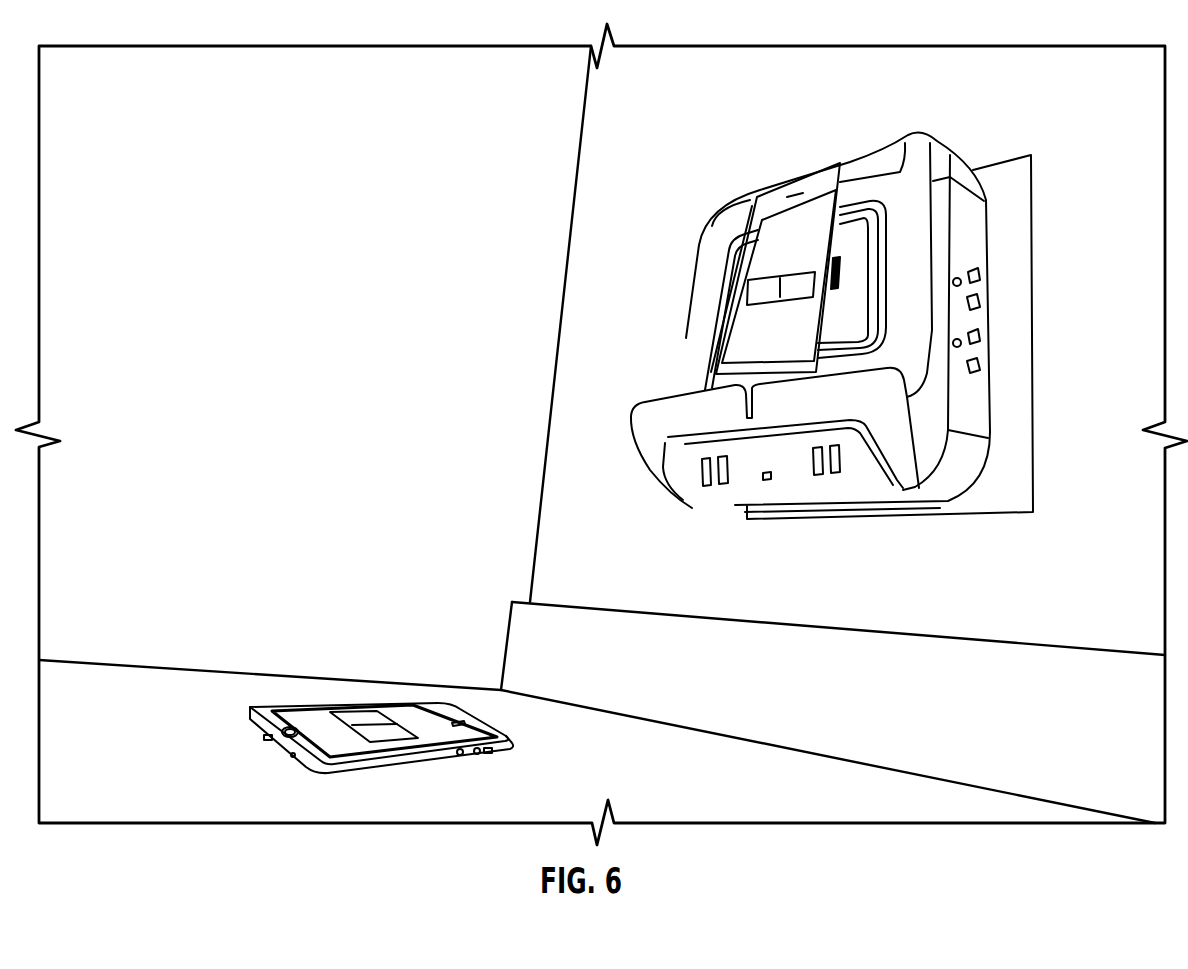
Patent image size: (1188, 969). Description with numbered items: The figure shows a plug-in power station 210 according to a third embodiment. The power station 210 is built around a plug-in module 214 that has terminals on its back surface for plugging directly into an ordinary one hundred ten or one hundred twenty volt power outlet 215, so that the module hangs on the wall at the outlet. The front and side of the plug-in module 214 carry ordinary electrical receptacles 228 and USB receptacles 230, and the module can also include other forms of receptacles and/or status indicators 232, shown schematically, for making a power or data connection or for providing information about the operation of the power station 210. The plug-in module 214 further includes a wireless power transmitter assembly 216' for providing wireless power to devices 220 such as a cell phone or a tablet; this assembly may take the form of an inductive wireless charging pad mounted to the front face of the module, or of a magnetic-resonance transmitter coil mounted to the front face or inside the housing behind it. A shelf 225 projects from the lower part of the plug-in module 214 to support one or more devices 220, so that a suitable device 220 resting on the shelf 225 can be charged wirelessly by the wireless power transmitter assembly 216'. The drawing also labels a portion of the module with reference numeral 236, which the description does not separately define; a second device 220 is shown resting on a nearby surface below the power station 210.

The power station 210 is at (1092, 35).
The plug-in module 214 is at (917, 150).
The power outlet 215 is at (1027, 480).
The wireless power transmitter assembly 216' is at (795, 249).
The device 220 is at (750, 267).
The shelf 225 is at (648, 430).
The electrical receptacles 228 is at (983, 274).
The USB receptacles 230 is at (710, 486).
The other receptacles and/or status indicators 232 is at (767, 481).
The charging receptacle rim 236 is at (877, 293).